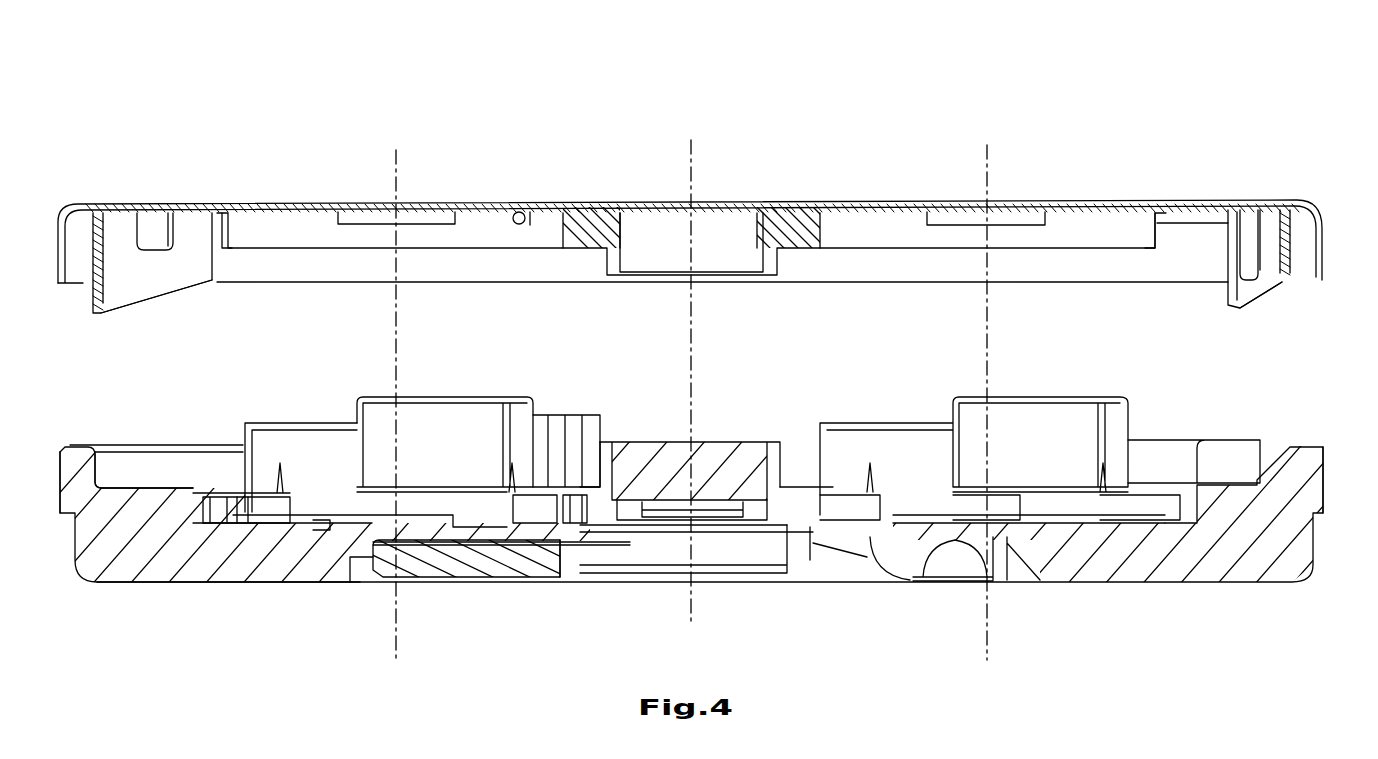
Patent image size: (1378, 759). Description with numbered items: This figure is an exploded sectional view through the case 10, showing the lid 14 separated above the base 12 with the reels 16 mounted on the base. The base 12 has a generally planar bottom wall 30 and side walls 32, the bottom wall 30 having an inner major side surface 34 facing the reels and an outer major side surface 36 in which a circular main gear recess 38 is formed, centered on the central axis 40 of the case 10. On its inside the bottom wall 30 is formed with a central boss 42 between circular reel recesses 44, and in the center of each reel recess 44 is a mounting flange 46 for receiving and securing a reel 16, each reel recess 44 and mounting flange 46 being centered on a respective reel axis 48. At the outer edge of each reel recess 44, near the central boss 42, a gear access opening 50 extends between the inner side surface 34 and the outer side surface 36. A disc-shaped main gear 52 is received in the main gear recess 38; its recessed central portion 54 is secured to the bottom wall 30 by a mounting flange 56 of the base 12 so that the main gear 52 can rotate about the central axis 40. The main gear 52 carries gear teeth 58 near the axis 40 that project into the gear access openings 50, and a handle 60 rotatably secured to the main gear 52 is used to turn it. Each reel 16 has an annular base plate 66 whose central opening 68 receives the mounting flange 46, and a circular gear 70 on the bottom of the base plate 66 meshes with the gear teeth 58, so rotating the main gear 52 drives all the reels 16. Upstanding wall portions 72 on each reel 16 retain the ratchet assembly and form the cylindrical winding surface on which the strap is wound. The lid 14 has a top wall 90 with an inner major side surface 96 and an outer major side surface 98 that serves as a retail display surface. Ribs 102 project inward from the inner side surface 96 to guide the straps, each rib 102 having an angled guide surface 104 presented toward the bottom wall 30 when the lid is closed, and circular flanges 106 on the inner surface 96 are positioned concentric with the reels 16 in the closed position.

The case 10 is at (821, 100).
The base 12 is at (689, 524).
The lid 14 is at (697, 218).
The reel 16 is at (528, 398).
The bottom wall 30 is at (173, 553).
The side wall 32 is at (1312, 478).
The inner major side surface 34 is at (157, 488).
The outer major side surface 36 is at (130, 587).
The main gear recess 38 is at (355, 585).
The central axis 40 is at (691, 165).
The central boss 42 is at (722, 455).
The reel recess 44 is at (1242, 453).
The mounting flange 46 is at (457, 517).
The reel axis 48 is at (1030, 140).
The gear access opening 50 is at (585, 500).
The main gear 52 is at (475, 582).
The recessed central portion 54 is at (782, 550).
The mounting flange 56 is at (750, 510).
The gear teeth 58 is at (583, 525).
The handle 60 is at (945, 585).
The base plate 66 is at (290, 522).
The central opening 68 is at (325, 525).
The gear 70 is at (553, 522).
The wall portions 72 is at (300, 423).
The top wall 90 is at (268, 203).
The inner major side surface 96 is at (530, 210).
The outer major side surface 98 is at (504, 212).
The rib 102 is at (1243, 290).
The angled guide surface 104 is at (1262, 290).
The circular flange 106 is at (1150, 250).